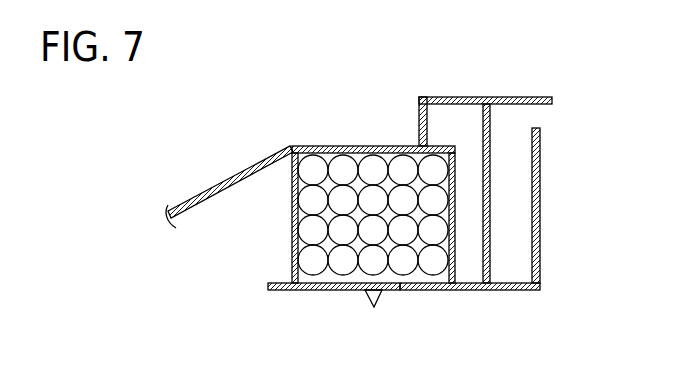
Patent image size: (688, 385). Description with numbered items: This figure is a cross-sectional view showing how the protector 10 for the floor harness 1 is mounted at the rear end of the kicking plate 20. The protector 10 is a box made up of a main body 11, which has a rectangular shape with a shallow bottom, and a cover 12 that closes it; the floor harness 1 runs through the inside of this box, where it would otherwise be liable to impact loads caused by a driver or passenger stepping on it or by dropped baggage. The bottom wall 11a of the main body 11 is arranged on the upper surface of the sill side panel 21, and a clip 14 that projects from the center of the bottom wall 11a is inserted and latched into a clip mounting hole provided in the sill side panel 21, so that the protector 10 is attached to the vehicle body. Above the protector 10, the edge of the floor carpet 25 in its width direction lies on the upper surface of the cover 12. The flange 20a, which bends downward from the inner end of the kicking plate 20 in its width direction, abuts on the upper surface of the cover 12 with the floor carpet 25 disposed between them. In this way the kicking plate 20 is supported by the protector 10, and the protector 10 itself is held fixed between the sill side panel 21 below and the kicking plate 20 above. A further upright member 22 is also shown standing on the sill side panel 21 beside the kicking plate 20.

The floor harness 1 is at (317, 266).
The protector 10 is at (290, 233).
The main body 11 is at (455, 229).
The bottom wall 11a is at (340, 291).
The cover 12 is at (372, 146).
The clip 14 is at (377, 299).
The kicking plate 20 is at (462, 97).
The flange 20a is at (420, 124).
The sill side panel 21 is at (435, 291).
The side wall 22 is at (541, 218).
The floor carpet 25 is at (228, 187).